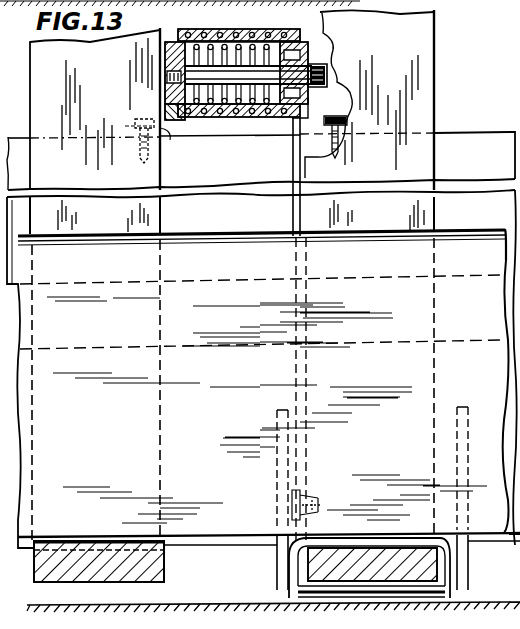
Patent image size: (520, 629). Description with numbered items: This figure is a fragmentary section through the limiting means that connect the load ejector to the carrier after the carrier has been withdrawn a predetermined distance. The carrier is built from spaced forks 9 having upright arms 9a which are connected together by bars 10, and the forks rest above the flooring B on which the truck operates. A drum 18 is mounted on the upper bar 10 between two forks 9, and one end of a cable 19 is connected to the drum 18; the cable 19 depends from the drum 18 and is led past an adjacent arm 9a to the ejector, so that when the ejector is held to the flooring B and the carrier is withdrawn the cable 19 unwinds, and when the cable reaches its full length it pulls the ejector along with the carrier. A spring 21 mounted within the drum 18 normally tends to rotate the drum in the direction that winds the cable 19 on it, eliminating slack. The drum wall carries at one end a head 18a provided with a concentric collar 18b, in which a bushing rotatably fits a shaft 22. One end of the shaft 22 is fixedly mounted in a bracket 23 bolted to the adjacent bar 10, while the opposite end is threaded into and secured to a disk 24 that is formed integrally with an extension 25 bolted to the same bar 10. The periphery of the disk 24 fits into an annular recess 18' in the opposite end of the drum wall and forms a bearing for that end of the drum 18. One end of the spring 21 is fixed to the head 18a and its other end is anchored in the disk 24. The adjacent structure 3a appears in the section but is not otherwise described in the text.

The hopper wall 3a is at (246, 243).
The fork 9 is at (165, 562).
The upright arm 9a is at (428, 88).
The bar 10 is at (490, 121).
The drum 18 is at (248, 84).
The annular recess 18' is at (238, 23).
The head 18a is at (290, 62).
The concentric collar 18b is at (284, 118).
The cable 19 is at (273, 29).
The spring 21 is at (208, 120).
The shaft 22 is at (328, 73).
The bracket 23 is at (318, 112).
The disk 24 is at (168, 86).
The extension 25 is at (162, 142).
The flooring B is at (230, 600).